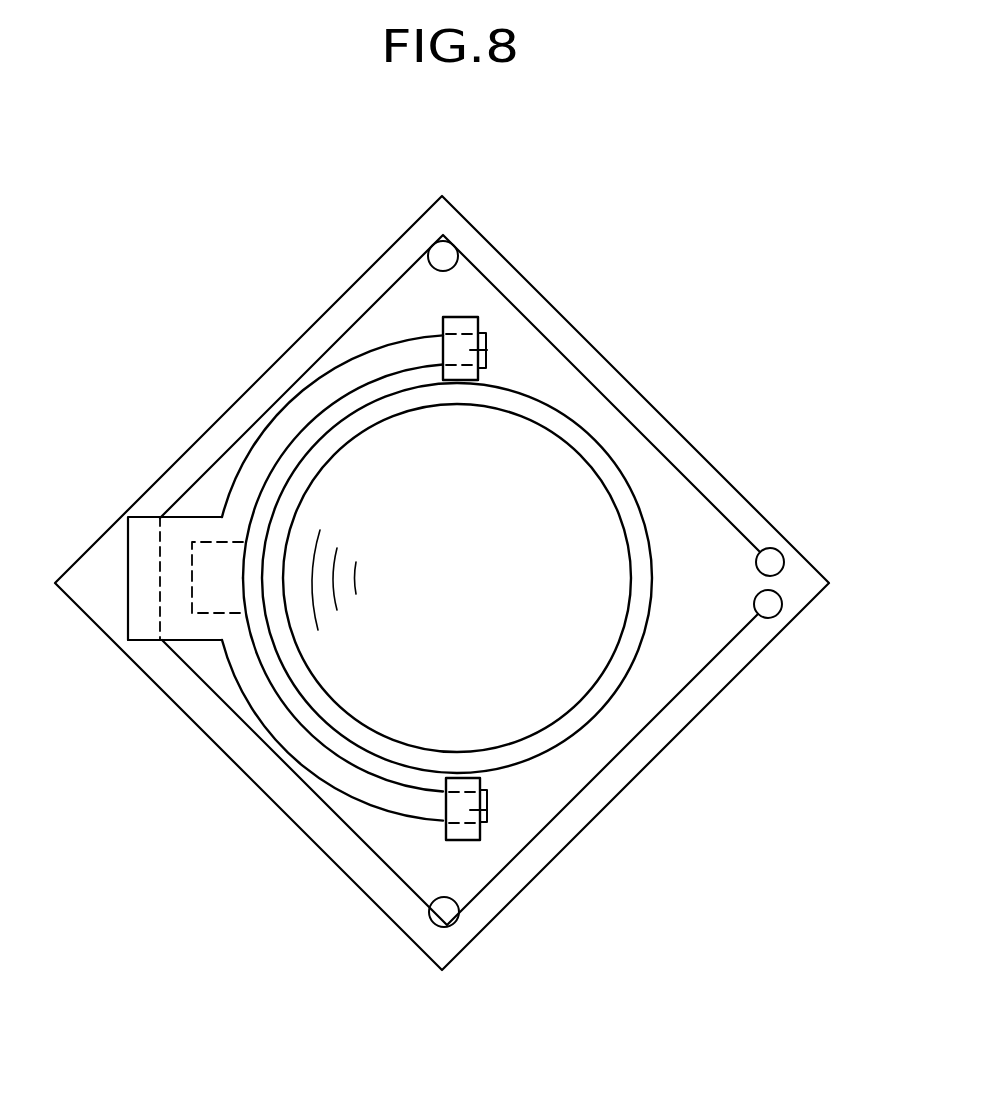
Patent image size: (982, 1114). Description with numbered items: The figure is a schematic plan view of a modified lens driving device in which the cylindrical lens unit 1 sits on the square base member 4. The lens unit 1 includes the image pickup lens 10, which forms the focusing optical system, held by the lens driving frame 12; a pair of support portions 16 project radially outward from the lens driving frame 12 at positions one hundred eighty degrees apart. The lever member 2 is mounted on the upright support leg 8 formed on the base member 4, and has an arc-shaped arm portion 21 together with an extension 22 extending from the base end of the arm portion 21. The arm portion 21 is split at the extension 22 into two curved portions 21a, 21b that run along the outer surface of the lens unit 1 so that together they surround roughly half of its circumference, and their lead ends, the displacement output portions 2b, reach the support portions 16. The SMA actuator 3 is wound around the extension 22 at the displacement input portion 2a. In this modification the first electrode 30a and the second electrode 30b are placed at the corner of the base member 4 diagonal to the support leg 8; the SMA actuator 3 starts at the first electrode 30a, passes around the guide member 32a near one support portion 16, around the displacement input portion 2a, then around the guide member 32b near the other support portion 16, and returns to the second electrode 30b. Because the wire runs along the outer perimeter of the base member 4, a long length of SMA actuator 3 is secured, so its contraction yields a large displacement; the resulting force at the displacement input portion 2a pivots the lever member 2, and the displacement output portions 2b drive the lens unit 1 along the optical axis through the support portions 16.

The lens unit 1 is at (549, 589).
The lever member 2 is at (245, 570).
The displacement input portion 2a is at (128, 602).
The displacement output portion 2b is at (487, 350).
The SMA actuator 3 is at (232, 447).
The base member 4 is at (462, 238).
The support leg 8 is at (213, 567).
The image pickup lens 10 is at (553, 683).
The lens driving frame 12 is at (630, 675).
The support portion 16 is at (463, 317).
The arm portion 21 is at (268, 570).
The curved portion of the arm portion 21a is at (343, 380).
The curved portion of the arm portion 21b is at (273, 713).
The extension 22 is at (183, 643).
The first electrode 30a is at (773, 562).
The second electrode 30b is at (772, 604).
The guide member 32a is at (438, 244).
The guide member 32b is at (442, 916).